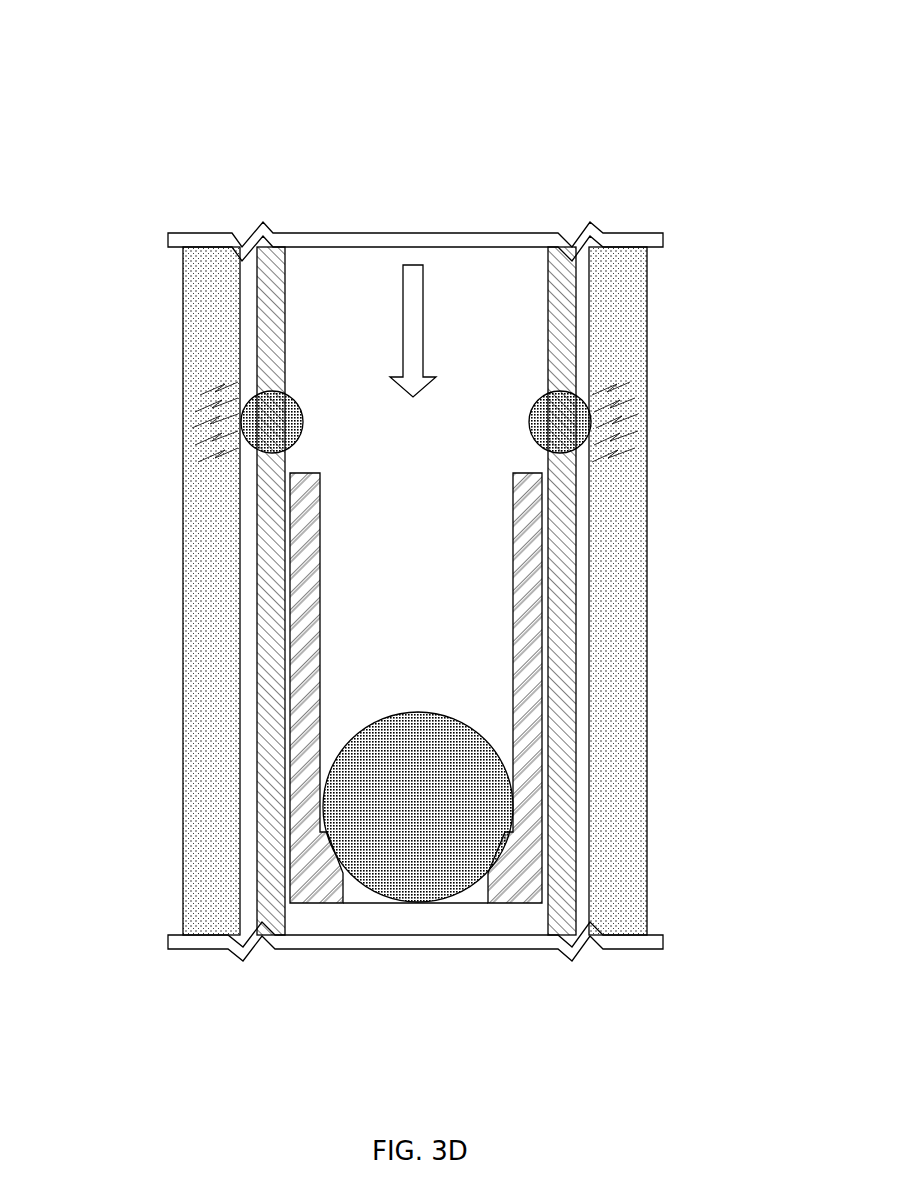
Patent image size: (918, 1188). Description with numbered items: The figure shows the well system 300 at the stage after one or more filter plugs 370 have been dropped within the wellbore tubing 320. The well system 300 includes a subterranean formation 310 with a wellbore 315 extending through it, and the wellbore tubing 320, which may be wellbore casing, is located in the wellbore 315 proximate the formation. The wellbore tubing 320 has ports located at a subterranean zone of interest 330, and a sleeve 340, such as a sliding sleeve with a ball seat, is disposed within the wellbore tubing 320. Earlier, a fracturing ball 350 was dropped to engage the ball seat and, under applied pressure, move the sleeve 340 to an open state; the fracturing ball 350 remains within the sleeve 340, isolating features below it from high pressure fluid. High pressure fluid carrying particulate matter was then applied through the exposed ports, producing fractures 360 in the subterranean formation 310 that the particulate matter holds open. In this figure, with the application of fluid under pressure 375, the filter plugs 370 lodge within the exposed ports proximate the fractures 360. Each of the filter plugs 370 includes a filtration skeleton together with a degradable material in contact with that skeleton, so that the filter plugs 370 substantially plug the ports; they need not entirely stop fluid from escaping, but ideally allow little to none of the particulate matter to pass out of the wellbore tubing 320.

The well system 300 is at (127, 93).
The subterranean formation 310 is at (182, 913).
The wellbore 315 is at (257, 913).
The wellbore tubing 320 is at (575, 902).
The subterranean zone of interest 330 is at (725, 345).
The sleeve 340 is at (530, 652).
The fracturing ball 350 is at (435, 817).
The fractures 360 is at (612, 455).
The filter plugs 370 is at (300, 443).
The fluid under pressure 375 is at (415, 263).